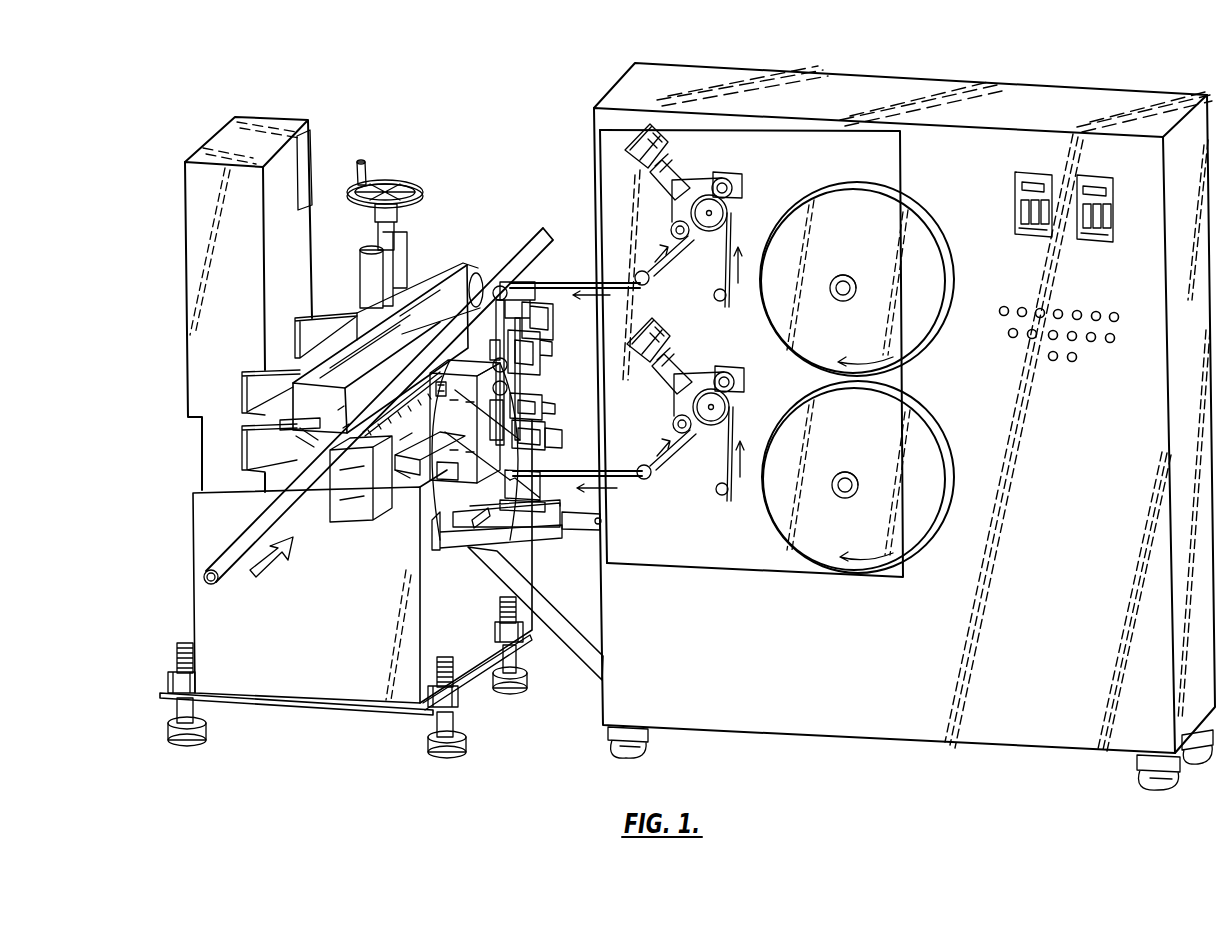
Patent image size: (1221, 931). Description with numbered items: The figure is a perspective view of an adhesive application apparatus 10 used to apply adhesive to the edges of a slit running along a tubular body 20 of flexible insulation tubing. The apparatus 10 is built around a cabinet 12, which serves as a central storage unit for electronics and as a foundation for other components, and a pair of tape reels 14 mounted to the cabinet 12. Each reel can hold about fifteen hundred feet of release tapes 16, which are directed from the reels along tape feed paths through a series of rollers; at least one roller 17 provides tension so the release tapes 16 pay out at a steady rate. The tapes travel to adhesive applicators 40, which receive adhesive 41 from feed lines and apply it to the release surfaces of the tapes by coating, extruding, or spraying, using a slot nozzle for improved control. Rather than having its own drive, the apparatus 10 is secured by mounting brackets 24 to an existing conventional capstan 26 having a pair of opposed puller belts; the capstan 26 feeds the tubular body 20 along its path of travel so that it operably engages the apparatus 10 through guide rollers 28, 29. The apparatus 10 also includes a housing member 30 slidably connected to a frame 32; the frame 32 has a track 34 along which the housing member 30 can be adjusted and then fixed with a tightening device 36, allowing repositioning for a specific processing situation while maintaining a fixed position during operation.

The adhesive application apparatus 10 is at (546, 91).
The cabinet 12 is at (862, 82).
The tape reels 14 is at (925, 240).
The release tapes 16 is at (625, 271).
The roller 17 is at (728, 211).
The tubular body 20 is at (232, 558).
The mounting brackets 24 is at (417, 523).
The capstan 26 is at (188, 300).
The guide roller 28 is at (318, 470).
The guide roller 29 is at (383, 500).
The housing member 30 is at (440, 467).
The frame 32 is at (552, 540).
The track 34 is at (588, 523).
The tightening device 36 is at (602, 519).
The adhesive applicators 40 is at (558, 340).
The adhesive 41 is at (548, 402).